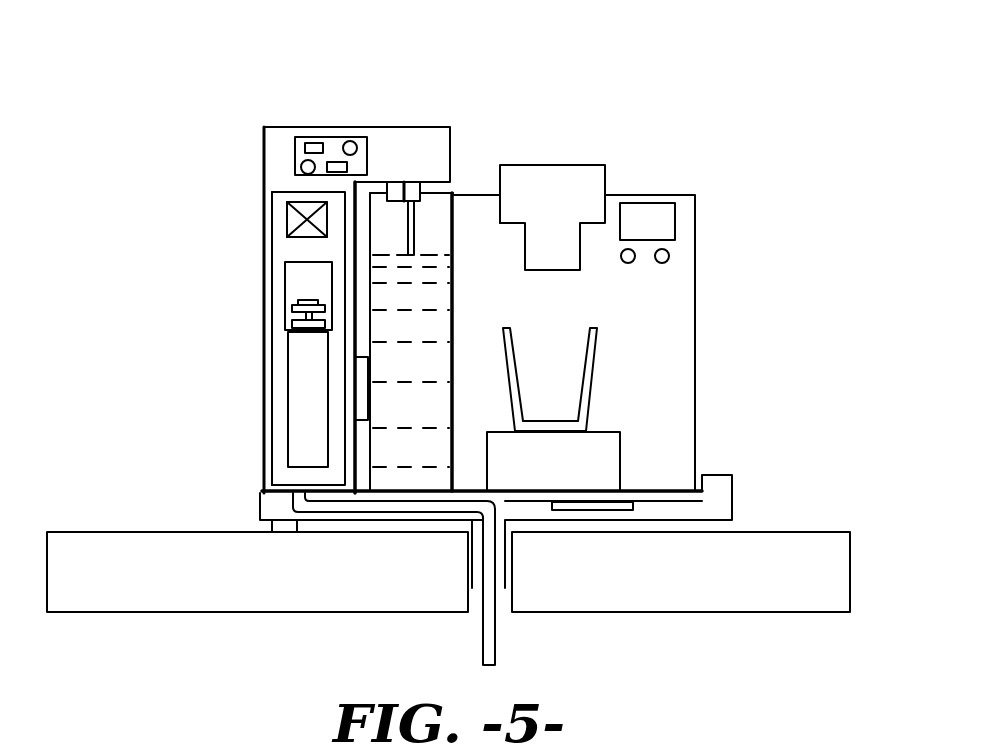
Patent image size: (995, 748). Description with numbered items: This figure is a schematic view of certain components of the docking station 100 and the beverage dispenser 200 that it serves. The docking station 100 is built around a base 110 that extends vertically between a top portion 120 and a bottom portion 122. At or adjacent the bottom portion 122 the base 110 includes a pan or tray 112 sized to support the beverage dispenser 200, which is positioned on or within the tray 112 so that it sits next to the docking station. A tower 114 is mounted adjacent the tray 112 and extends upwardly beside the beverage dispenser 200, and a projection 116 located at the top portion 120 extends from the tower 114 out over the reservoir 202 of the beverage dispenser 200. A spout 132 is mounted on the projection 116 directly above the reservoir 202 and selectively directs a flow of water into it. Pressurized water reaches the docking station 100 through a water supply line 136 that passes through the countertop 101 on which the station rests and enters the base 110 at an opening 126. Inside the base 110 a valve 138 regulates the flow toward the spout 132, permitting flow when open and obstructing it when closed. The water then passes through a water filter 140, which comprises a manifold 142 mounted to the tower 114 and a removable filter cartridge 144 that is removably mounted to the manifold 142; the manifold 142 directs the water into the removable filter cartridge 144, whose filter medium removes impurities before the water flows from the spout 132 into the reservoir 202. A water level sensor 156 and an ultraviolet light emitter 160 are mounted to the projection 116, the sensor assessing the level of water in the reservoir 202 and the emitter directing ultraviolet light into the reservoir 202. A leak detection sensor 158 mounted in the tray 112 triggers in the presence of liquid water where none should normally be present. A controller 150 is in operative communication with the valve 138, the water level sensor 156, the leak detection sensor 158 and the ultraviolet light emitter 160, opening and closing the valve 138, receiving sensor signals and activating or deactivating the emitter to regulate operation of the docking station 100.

The docking station 100 is at (256, 127).
The countertop 101 is at (125, 542).
The base 110 is at (265, 407).
The tray 112 is at (722, 493).
The tower 114 is at (268, 320).
The projection 116 is at (393, 135).
The top portion 120 is at (260, 193).
The bottom portion 122 is at (249, 493).
The opening 126 is at (501, 530).
The spout 132 is at (422, 189).
The water supply line 136 is at (481, 620).
The valve 138 is at (290, 225).
The water filter 140 is at (285, 263).
The manifold 142 is at (303, 282).
The removable filter cartridge 144 is at (303, 357).
The controller 150 is at (355, 135).
The water level sensor 156 is at (395, 192).
The leak detection sensor 158 is at (602, 508).
The ultraviolet light emitter 160 is at (363, 385).
The beverage dispenser 200 is at (696, 302).
The reservoir 202 is at (436, 301).